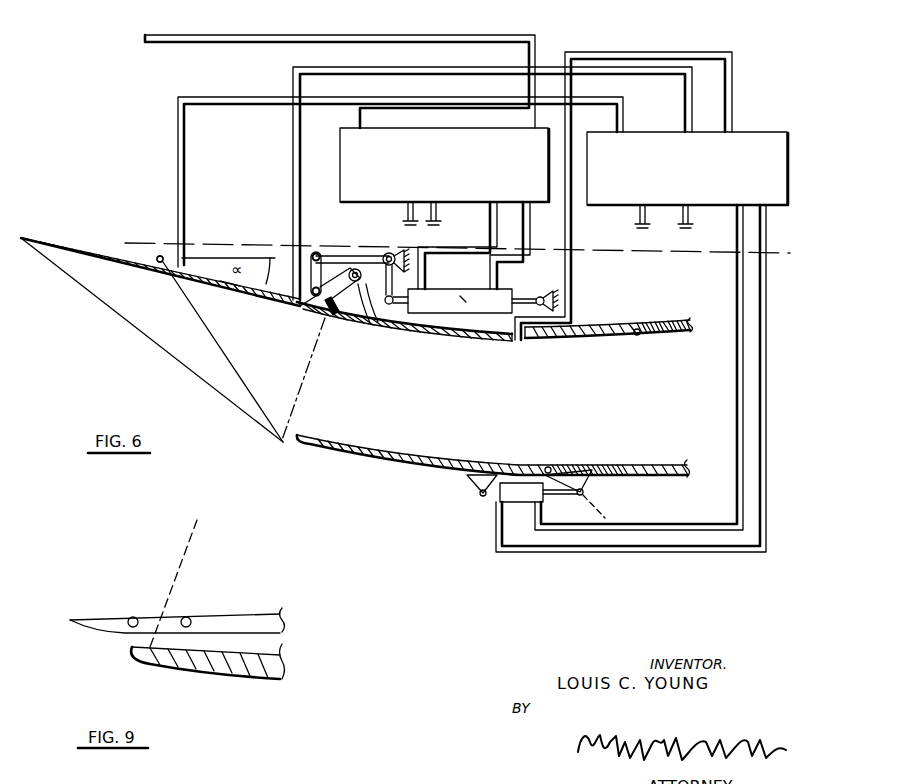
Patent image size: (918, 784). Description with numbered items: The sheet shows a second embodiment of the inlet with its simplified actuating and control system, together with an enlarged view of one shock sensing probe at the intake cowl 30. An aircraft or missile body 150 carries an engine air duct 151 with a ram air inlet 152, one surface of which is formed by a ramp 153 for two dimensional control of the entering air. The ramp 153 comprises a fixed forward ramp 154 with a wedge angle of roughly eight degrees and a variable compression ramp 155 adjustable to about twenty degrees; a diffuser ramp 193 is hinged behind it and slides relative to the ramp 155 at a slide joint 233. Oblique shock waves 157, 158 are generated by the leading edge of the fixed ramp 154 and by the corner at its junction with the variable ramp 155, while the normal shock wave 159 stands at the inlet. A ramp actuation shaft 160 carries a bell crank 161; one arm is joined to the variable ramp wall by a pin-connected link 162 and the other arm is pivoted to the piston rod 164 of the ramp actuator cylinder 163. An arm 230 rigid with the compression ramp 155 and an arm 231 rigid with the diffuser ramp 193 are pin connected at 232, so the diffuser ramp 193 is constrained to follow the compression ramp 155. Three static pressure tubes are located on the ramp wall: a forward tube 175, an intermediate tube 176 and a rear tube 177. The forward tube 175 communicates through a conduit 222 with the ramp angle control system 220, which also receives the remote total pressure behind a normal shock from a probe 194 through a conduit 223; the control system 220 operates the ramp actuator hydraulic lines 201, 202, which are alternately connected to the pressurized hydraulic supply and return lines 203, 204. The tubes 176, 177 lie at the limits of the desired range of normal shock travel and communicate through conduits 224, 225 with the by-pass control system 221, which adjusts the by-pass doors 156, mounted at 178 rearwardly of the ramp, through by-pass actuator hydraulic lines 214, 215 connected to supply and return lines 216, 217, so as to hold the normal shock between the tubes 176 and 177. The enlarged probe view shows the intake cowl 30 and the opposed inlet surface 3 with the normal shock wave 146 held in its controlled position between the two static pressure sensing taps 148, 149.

In FIG. 9, the lower inlet lip 3 is at (213, 663).
In FIG. 9, the intake cowl 30 is at (104, 619).
In FIG. 9, the reference line 146 is at (188, 552).
In FIG. 9, the static pressure sensing tap 148 is at (132, 617).
In FIG. 9, the static pressure sensing tap 149 is at (187, 617).
In FIG. 6, the aircraft or missile body 150 is at (213, 240).
In FIG. 6, the engine air duct 151 is at (417, 428).
In FIG. 6, the ram air inlet 152 is at (303, 400).
In FIG. 6, the ramp 153 is at (331, 326).
In FIG. 6, the fixed forward ramp 154 is at (72, 248).
In FIG. 6, the variable compression ramp 155 is at (240, 290).
In FIG. 6, the by-pass doors 156 is at (590, 463).
In FIG. 6, the oblique shock wave 157 is at (92, 292).
In FIG. 6, the shock wave line 158 is at (197, 314).
In FIG. 6, the normal shock wave 159 is at (318, 340).
In FIG. 6, the ramp actuation shaft 160 is at (397, 300).
In FIG. 6, the bell crank 161 is at (346, 266).
In FIG. 6, the pin-connected link 162 is at (312, 256).
In FIG. 6, the ramp actuator cylinder 163 is at (467, 300).
In FIG. 6, the piston rod 164 is at (402, 303).
In FIG. 6, the forward static pressure sensing tube 175 is at (160, 263).
In FIG. 6, the intermediate static pressure sensing tube 176 is at (295, 303).
In FIG. 6, the rear static pressure sensing tube 177 is at (517, 340).
In FIG. 6, the door hinge bracket 178 is at (488, 498).
In FIG. 6, the diffuser ramp 193 is at (608, 338).
In FIG. 6, the total pressure probe 194 is at (147, 34).
In FIG. 6, the ramp actuator hydraulic line 201 is at (498, 278).
In FIG. 6, the ramp actuator hydraulic line 202 is at (422, 270).
In FIG. 6, the pressurized hydraulic fluid supply line 203 is at (409, 212).
In FIG. 6, the hydraulic fluid return line 204 is at (437, 213).
In FIG. 6, the by-pass actuator hydraulic line 214 is at (663, 548).
In FIG. 6, the by-pass actuator hydraulic line 215 is at (662, 530).
In FIG. 6, the pressurized hydraulic fluid supply line 216 is at (635, 220).
In FIG. 6, the hydraulic fluid return line 217 is at (692, 213).
In FIG. 6, the ramp angle control system 220 is at (347, 180).
In FIG. 6, the by-pass control system 221 is at (625, 135).
In FIG. 6, the conduit 222 is at (250, 102).
In FIG. 6, the conduit 223 is at (348, 38).
In FIG. 6, the conduit 224 is at (330, 68).
In FIG. 6, the conduit 225 is at (605, 55).
In FIG. 6, the arm 230 is at (340, 268).
In FIG. 6, the arm 231 is at (372, 320).
In FIG. 6, the pin connection 232 is at (357, 258).
In FIG. 6, the slide joint 233 is at (315, 330).